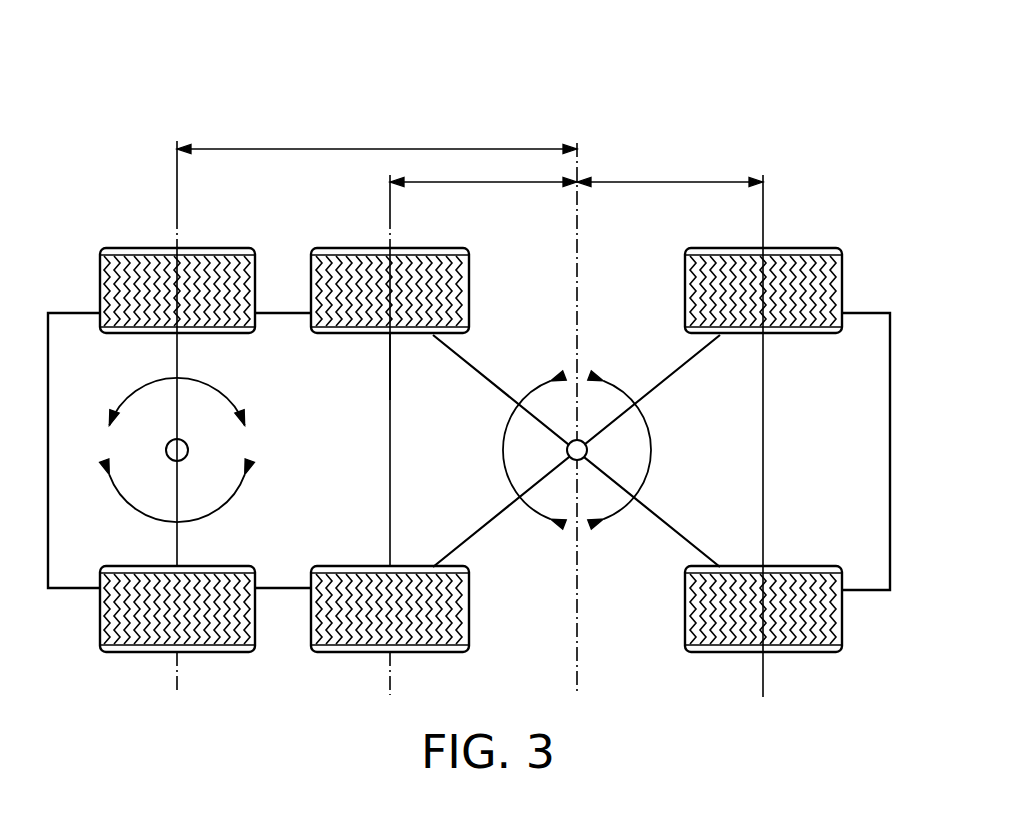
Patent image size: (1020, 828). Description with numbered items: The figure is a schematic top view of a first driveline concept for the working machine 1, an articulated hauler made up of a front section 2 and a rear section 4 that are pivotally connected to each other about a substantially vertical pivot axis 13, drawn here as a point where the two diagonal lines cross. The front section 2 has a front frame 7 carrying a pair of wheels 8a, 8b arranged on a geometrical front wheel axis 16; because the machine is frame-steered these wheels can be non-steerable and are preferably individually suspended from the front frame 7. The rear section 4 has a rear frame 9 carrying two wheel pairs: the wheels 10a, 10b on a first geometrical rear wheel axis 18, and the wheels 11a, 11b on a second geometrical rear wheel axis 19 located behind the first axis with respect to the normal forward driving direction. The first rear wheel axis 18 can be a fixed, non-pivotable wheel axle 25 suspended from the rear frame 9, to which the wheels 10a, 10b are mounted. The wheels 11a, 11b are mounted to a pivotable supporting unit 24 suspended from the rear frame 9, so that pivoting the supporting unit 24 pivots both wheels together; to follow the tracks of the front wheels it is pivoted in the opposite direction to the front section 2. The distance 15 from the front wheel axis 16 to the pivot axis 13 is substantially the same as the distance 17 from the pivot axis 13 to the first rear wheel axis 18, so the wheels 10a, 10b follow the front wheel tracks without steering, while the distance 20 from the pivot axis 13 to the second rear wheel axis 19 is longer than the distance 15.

The working machine 1 is at (588, 68).
The front section 2 is at (833, 165).
The rear section 4 is at (107, 160).
The front frame 7 is at (866, 330).
The wheel 8a is at (742, 248).
The wheel 8b is at (740, 652).
The rear frame 9 is at (68, 330).
The wheel 10a is at (365, 248).
The wheel 10b is at (365, 652).
The wheel 11a is at (207, 248).
The wheel 11b is at (205, 652).
The vertical pivot axis 13 is at (570, 455).
The distance 15 is at (672, 182).
The geometrical front wheel axis 16 is at (765, 220).
The distance 17 is at (480, 182).
The first geometrical rear wheel axis 18 is at (392, 220).
The second geometrical rear wheel axis 19 is at (176, 215).
The distance 20 is at (378, 149).
The pivotable supporting unit 24 is at (180, 348).
The wheel axle 25 is at (388, 348).